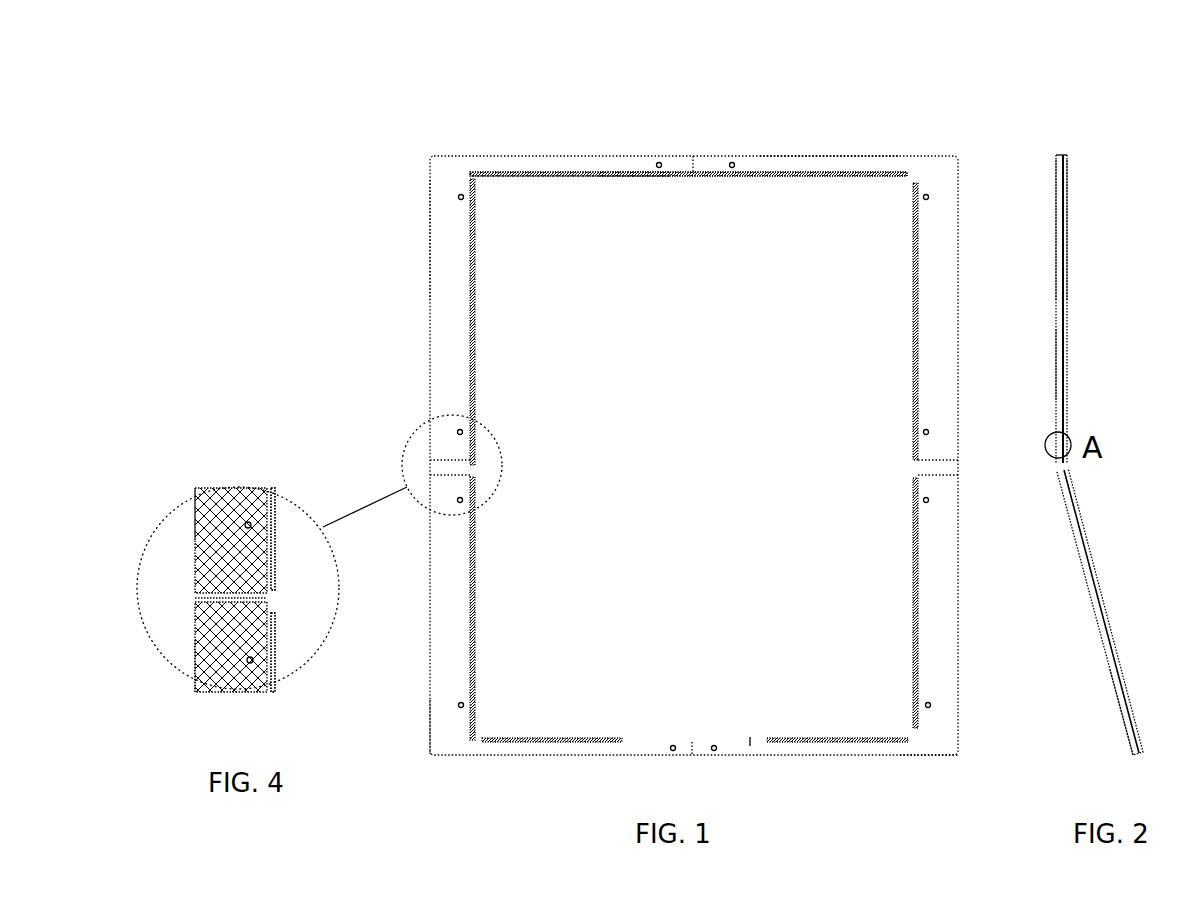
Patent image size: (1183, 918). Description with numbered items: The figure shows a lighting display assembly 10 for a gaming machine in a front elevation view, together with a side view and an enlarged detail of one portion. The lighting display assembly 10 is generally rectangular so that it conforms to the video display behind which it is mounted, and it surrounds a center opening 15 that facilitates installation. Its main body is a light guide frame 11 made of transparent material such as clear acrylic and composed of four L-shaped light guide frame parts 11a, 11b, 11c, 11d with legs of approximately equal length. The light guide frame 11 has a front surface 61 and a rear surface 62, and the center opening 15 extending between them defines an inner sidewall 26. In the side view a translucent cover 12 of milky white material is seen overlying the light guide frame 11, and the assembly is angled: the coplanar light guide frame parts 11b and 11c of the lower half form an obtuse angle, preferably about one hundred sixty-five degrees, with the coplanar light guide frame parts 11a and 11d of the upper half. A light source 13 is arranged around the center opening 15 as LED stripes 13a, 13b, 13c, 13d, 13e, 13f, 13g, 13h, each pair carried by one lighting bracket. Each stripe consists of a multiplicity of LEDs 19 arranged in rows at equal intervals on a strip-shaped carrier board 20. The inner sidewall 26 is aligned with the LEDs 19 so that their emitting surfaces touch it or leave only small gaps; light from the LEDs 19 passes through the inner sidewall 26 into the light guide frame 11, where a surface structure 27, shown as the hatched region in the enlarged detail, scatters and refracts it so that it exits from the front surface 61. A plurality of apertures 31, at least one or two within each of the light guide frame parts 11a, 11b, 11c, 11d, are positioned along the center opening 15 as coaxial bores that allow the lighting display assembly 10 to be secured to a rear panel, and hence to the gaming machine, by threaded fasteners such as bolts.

In FIG. 1, the lighting display assembly 10 is at (947, 46).
In FIG. 1, the light guide frame 11 is at (948, 149).
In FIG. 2, the light guide frame 11 is at (1059, 151).
In FIG. 1, the light guide frame part 11a is at (811, 160).
In FIG. 2, the light guide frame part 11a is at (1057, 350).
In FIG. 1, the light guide frame part 11b is at (935, 750).
In FIG. 2, the light guide frame part 11b is at (1122, 707).
In FIG. 1, the light guide frame part 11c is at (440, 748).
In FIG. 4, the light guide frame part 11c is at (197, 658).
In FIG. 1, the light guide frame part 11d is at (440, 237).
In FIG. 4, the light guide frame part 11d is at (198, 505).
In FIG. 2, the translucent cover 12 is at (1067, 226).
In FIG. 1, the light source 13 is at (909, 169).
In FIG. 1, the LED stripe 13a is at (752, 172).
In FIG. 1, the LED stripe 13b is at (915, 315).
In FIG. 1, the LED stripe 13c is at (920, 668).
In FIG. 1, the LED stripe 13d is at (815, 742).
In FIG. 1, the LED stripe 13e is at (553, 742).
In FIG. 1, the LED stripe 13f is at (470, 630).
In FIG. 4, the LED stripe 13f is at (273, 652).
In FIG. 1, the LED stripe 13g is at (281, 501).
In FIG. 4, the LED stripe 13g is at (273, 539).
In FIG. 1, the LED stripe 13h is at (605, 174).
In FIG. 1, the center opening 15 is at (590, 243).
In FIG. 4, the LEDs 19 is at (270, 693).
In FIG. 4, the strip-shaped carrier board 20 is at (278, 680).
In FIG. 2, the strip-shaped carrier board 20 is at (1067, 437).
In FIG. 1, the inner sidewall 26 is at (472, 175).
In FIG. 4, the inner sidewall 26 is at (268, 604).
In FIG. 4, the surface structure 27 is at (198, 627).
In FIG. 1, the apertures 31 is at (658, 162).
In FIG. 4, the apertures 31 is at (247, 521).
In FIG. 2, the front surface 61 is at (1074, 167).
In FIG. 2, the rear surface 62 is at (1049, 167).